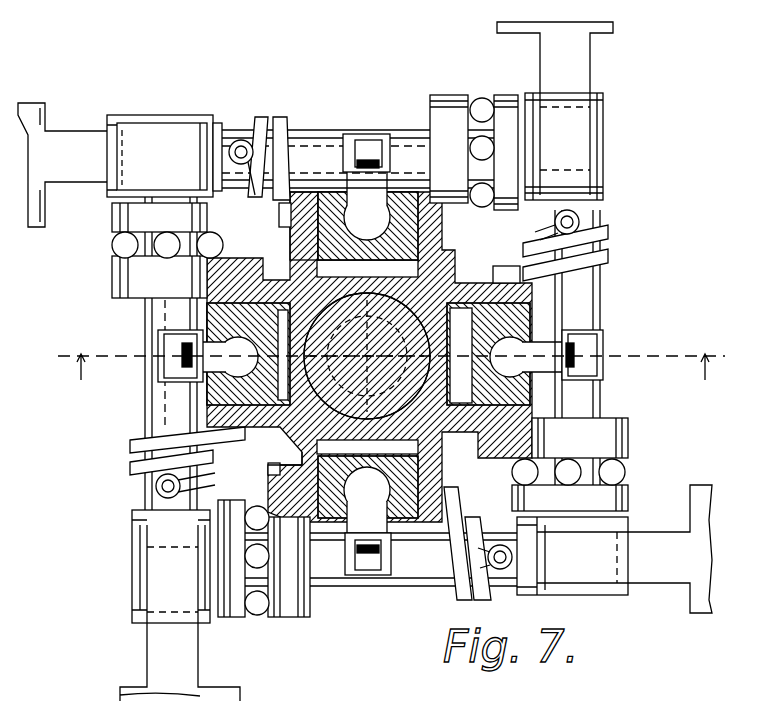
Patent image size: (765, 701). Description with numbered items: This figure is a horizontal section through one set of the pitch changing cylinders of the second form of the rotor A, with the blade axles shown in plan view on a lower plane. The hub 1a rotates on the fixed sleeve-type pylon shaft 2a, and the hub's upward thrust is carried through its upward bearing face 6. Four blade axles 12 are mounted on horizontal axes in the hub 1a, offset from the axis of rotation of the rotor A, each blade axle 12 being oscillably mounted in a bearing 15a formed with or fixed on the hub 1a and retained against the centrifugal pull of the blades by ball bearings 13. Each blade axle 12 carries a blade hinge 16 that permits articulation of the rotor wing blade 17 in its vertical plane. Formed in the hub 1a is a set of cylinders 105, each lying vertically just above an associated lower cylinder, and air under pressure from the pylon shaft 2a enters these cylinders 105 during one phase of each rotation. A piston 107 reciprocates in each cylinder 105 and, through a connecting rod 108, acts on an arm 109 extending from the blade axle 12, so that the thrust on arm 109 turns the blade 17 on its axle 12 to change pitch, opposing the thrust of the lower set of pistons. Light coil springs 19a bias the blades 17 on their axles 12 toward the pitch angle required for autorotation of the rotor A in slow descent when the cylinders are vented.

The hub 1a is at (452, 281).
The pylon shaft 2a is at (275, 458).
The upward bearing face 6 is at (398, 375).
The blade axle 12 is at (312, 135).
The ball bearing 13 is at (117, 247).
The bearing 15a is at (112, 292).
The blade hinge 16 is at (146, 114).
The rotor wing blade 17 is at (35, 225).
The coil spring 19a is at (255, 118).
The cylinder 105 is at (312, 252).
The piston 107 is at (318, 238).
The connecting rod 108 is at (380, 352).
The arm 109 is at (368, 140).
The rotor A is at (610, 302).